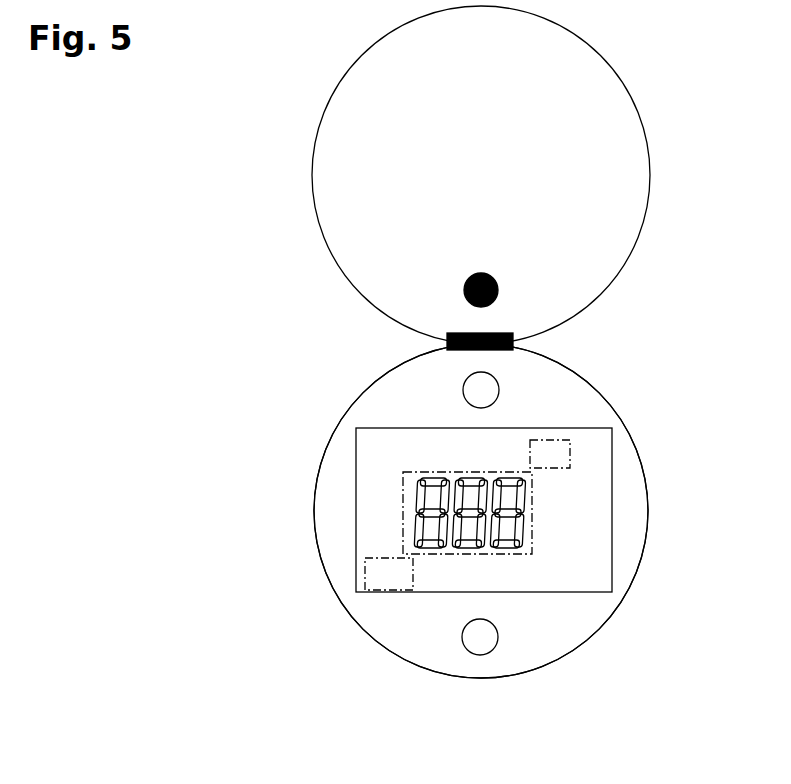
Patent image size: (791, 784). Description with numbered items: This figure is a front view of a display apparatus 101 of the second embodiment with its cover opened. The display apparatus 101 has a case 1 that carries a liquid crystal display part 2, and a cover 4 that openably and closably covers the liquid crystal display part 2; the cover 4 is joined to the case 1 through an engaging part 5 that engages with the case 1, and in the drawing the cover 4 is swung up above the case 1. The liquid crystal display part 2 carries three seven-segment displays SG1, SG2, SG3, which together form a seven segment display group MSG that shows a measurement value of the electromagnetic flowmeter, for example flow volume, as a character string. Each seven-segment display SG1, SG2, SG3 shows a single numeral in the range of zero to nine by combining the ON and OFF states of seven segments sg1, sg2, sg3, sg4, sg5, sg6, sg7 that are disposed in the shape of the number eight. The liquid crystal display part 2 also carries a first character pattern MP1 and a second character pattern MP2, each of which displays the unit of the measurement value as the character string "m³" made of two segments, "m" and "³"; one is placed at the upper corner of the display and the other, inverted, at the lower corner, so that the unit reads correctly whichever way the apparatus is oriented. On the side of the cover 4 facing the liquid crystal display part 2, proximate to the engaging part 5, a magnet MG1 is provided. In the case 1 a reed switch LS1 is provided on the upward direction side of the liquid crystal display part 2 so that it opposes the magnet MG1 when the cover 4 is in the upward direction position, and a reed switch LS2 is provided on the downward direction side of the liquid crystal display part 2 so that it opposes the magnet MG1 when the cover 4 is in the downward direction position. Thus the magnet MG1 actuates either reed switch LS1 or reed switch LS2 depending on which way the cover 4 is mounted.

The cover 4 is at (635, 183).
The engaging part 5 is at (513, 334).
The magnet MG1 is at (463, 281).
The display apparatus 101 is at (332, 485).
The case 1 is at (628, 432).
The liquid crystal display part 2 is at (600, 477).
The reed switch LS1 is at (488, 381).
The reed switch LS2 is at (472, 642).
The first character pattern MP1 is at (563, 446).
The second character pattern MP2 is at (393, 594).
The seven segment display group MSG is at (527, 555).
The seven-segment display SG1 is at (434, 494).
The seven-segment display SG2 is at (466, 478).
The seven-segment display SG3 is at (523, 492).
The segment sg1 is at (429, 478).
The segment sg2 is at (418, 492).
The segment sg3 is at (446, 484).
The segment sg4 is at (417, 532).
The segment sg5 is at (430, 546).
The segment sg6 is at (443, 535).
The segment sg7 is at (437, 480).